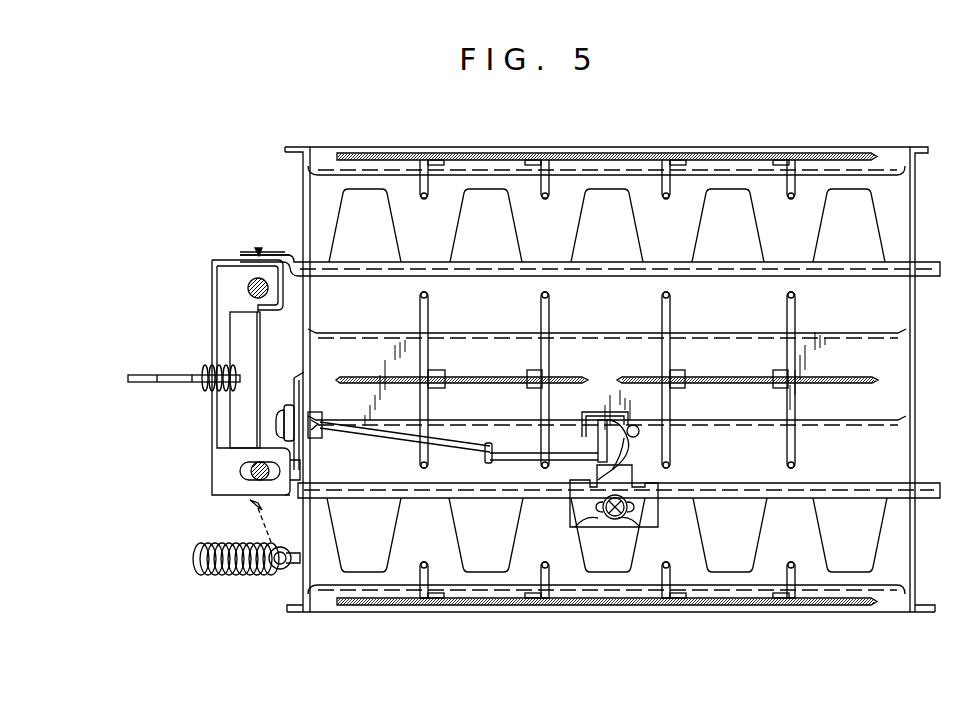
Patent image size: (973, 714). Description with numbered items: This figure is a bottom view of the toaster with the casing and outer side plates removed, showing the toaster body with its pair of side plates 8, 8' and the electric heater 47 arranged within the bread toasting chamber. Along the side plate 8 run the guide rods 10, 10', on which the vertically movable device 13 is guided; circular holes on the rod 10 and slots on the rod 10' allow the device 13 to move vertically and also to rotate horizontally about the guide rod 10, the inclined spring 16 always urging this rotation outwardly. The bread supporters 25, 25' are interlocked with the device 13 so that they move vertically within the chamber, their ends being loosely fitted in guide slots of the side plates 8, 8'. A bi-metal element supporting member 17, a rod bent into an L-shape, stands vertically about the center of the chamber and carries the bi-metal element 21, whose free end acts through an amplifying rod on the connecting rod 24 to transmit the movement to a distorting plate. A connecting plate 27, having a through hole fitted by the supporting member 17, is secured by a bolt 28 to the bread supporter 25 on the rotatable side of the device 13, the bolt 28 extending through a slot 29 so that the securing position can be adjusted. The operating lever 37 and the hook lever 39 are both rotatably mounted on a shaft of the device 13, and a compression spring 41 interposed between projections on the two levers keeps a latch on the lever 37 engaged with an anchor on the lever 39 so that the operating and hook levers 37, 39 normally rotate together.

The side plate 8 is at (285, 379).
The side plate 8' is at (935, 379).
The guide rod 10 is at (205, 279).
The guide rod 10' is at (224, 482).
The vertically movable device 13 is at (213, 445).
The spring 16 is at (250, 576).
The bi-metal element supporting member 17 is at (632, 425).
The bi-metal element 21 is at (494, 462).
The connecting rod 24 is at (393, 438).
The bread supporter 25 is at (619, 469).
The bread supporter 25' is at (606, 244).
The connecting plate 27 is at (660, 487).
The bolt 28 is at (633, 514).
The slot 29 is at (590, 522).
The operating lever 37 is at (148, 374).
The hook lever 39 is at (240, 336).
The compression spring 41 is at (205, 386).
The electric heater 47 is at (722, 152).